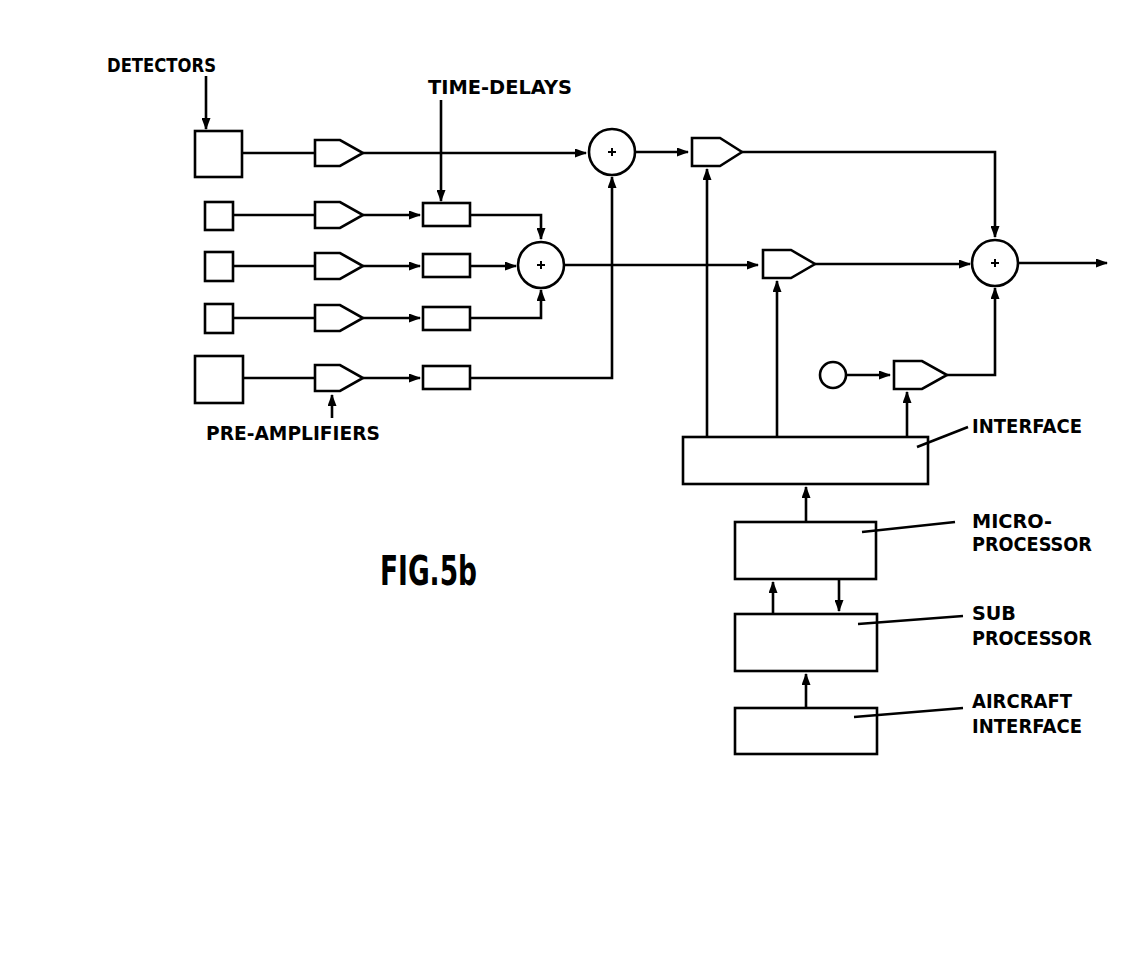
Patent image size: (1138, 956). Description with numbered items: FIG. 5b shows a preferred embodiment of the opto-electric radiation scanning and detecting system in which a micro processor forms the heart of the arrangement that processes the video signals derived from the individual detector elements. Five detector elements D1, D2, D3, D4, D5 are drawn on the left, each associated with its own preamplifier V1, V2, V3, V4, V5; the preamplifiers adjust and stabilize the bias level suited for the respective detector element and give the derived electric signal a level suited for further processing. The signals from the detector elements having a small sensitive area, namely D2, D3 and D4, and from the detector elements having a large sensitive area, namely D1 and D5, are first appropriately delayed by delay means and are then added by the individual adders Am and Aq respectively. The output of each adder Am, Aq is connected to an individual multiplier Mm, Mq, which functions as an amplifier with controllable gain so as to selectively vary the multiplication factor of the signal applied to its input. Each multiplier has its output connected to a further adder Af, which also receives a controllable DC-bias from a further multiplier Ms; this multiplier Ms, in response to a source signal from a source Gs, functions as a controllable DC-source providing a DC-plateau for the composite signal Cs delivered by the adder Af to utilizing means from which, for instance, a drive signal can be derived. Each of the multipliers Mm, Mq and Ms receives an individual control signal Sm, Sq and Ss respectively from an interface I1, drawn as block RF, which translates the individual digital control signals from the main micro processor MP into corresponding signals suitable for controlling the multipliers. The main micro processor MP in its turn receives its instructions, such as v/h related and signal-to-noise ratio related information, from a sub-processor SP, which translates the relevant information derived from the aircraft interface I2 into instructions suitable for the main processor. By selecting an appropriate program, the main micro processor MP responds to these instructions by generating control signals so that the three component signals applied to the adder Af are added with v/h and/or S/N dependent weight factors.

The detector element D1 is at (204, 155).
The detector element D2 is at (211, 222).
The detector element D3 is at (211, 271).
The detector element D4 is at (211, 323).
The detector element D5 is at (211, 385).
The preamplifier V1 is at (321, 150).
The preamplifier V2 is at (321, 212).
The preamplifier V3 is at (321, 263).
The preamplifier V4 is at (321, 315).
The preamplifier V5 is at (321, 375).
The adder Am is at (554, 278).
The adder Aq is at (622, 138).
The further adder Af is at (1010, 248).
The composite signal Cs is at (1077, 264).
The multiplier Mq is at (722, 146).
The multiplier Mm is at (798, 258).
The further multiplier Ms is at (919, 366).
The source Gs is at (839, 365).
The control signal Sq is at (707, 221).
The control signal Sm is at (777, 320).
The control signal Ss is at (907, 418).
The interface register RF is at (805, 460).
The interface I1 is at (920, 460).
The main micro processor MP is at (868, 549).
The sub-processor SP is at (868, 641).
The aircraft interface I2 is at (868, 731).